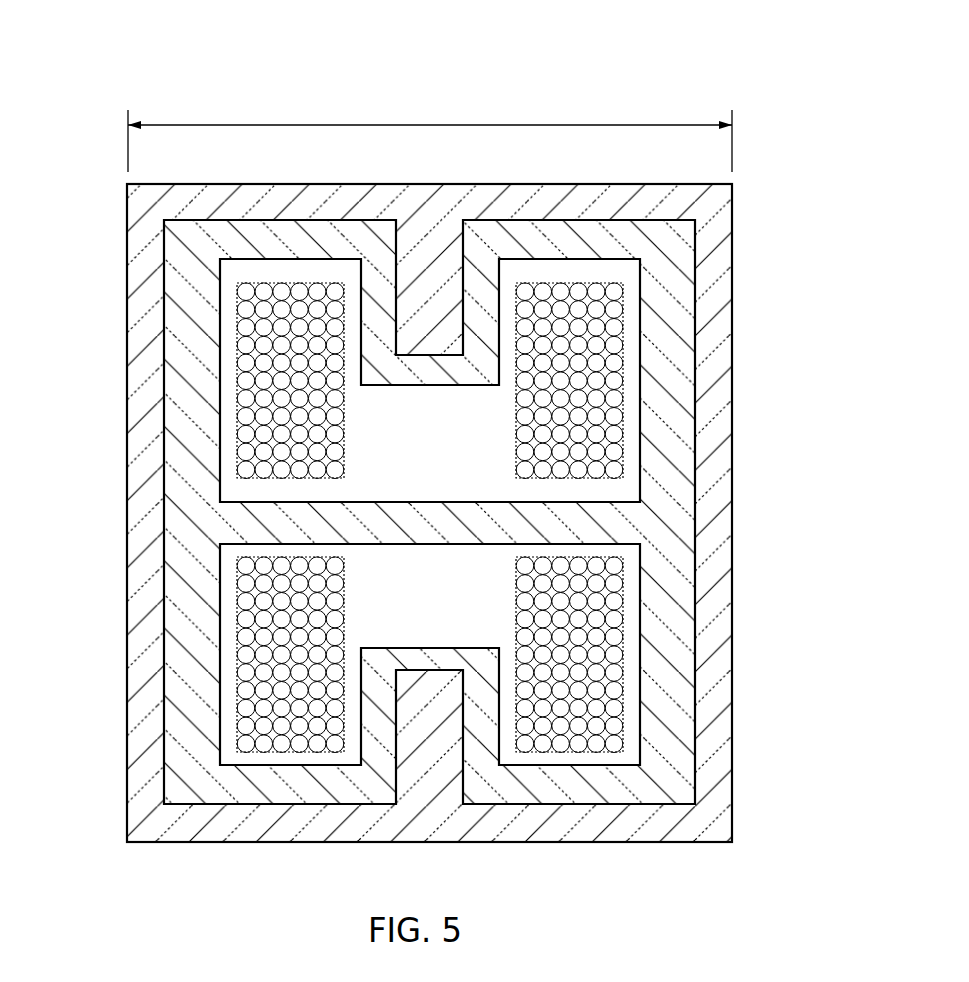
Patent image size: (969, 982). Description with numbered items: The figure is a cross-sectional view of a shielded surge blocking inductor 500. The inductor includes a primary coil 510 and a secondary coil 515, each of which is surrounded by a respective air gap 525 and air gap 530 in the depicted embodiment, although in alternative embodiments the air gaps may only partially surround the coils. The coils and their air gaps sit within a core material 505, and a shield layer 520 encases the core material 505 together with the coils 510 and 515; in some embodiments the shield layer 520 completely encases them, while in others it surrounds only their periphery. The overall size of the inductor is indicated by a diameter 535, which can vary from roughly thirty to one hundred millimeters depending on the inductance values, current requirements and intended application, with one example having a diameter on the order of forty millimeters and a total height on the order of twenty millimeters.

The shielded surge blocking inductor 500 is at (774, 33).
The core material 505 is at (690, 310).
The primary coil 510 is at (240, 360).
The secondary coil 515 is at (240, 667).
The shield layer 520 is at (723, 527).
The air gap 525 is at (449, 451).
The air gap 530 is at (449, 602).
The diameter 535 is at (430, 125).